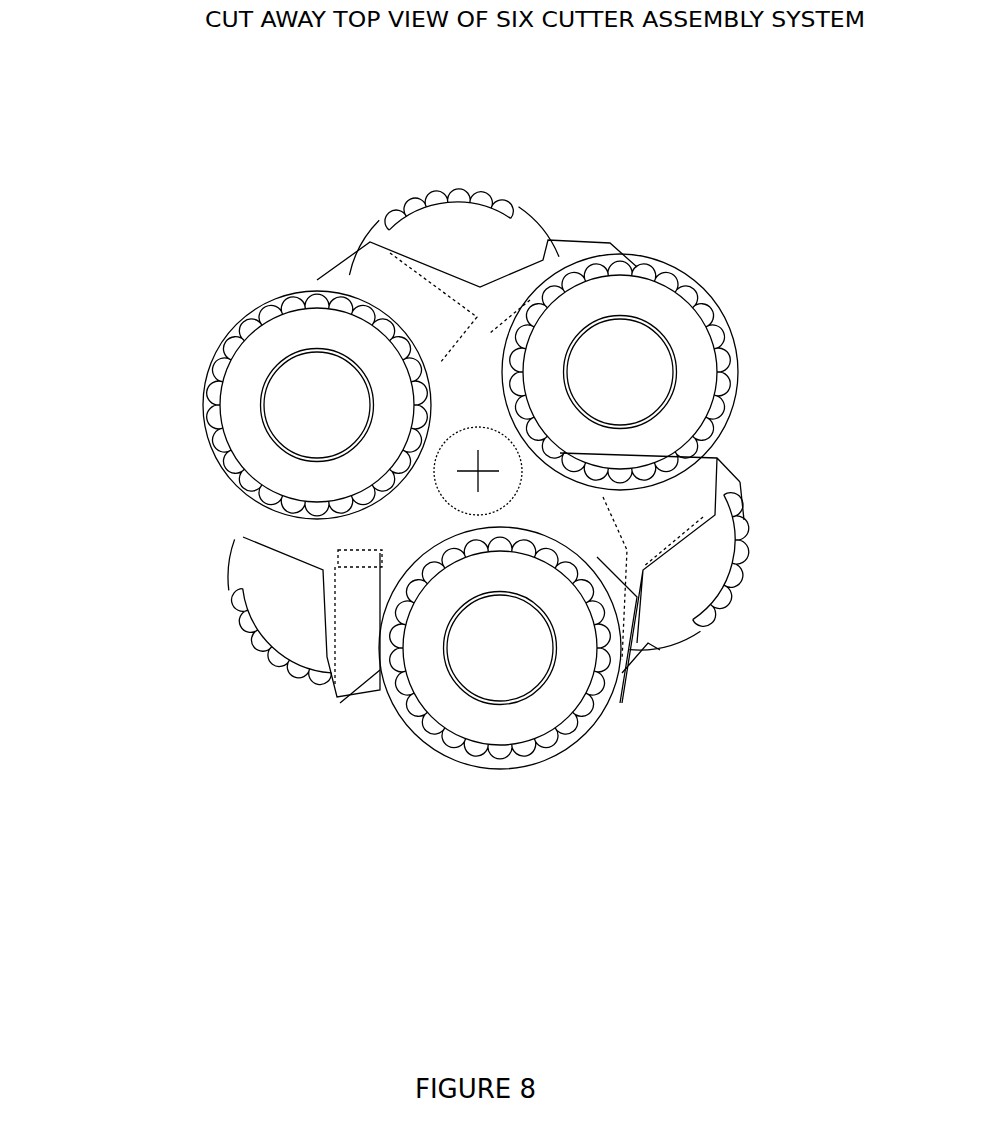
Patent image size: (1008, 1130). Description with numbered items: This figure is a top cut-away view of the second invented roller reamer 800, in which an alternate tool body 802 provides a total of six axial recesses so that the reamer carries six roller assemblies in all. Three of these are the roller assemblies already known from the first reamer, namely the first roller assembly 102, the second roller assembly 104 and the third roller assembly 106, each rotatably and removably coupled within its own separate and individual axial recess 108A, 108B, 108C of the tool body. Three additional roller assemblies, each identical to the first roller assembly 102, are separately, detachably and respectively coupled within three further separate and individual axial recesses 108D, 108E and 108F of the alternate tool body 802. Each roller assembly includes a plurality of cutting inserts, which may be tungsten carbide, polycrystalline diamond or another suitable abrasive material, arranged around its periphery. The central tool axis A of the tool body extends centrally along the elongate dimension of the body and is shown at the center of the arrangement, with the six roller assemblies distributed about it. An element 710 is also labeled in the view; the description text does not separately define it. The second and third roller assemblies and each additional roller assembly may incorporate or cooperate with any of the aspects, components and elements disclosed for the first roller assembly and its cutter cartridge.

The second invented roller reamer 800 is at (122, 178).
The alternate tool body 802 is at (343, 270).
The roller assembly 102 is at (382, 192).
The second roller assembly 104 is at (573, 743).
The third roller assembly 106 is at (215, 322).
The axial recess 108A is at (615, 245).
The axial recess 108B is at (380, 670).
The axial recess 108C is at (360, 310).
The axial recess 108D is at (543, 222).
The axial recess 108E is at (745, 482).
The axial recess 108F is at (330, 700).
The housing 710 is at (786, 501).
The tool axis A is at (480, 472).